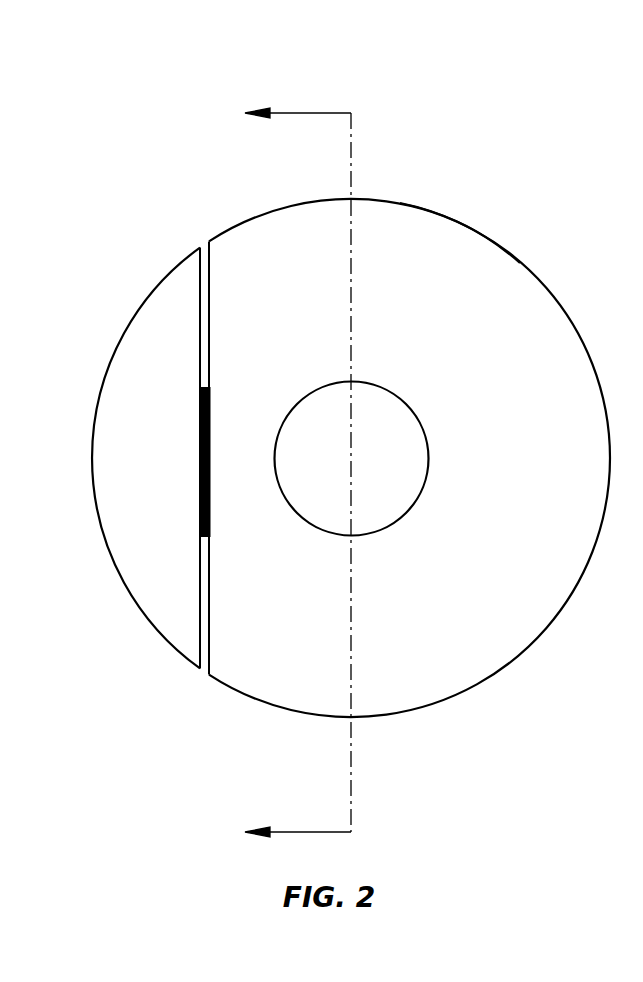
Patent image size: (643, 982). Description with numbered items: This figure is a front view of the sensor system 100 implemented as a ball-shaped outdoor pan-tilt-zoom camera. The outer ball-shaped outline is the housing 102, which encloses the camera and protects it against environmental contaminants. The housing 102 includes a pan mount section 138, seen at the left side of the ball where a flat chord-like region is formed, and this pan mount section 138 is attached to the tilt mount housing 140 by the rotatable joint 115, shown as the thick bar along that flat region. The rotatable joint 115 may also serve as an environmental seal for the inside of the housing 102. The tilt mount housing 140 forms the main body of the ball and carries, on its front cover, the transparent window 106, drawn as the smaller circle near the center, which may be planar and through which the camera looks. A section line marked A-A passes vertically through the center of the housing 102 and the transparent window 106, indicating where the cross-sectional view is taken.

The sensor system 100 is at (118, 78).
The housing 102 is at (514, 716).
The transparent window 106 is at (377, 420).
The rotatable joint 115 is at (200, 438).
The pan mount section 138 is at (157, 283).
The tilt mount housing 140 is at (460, 230).